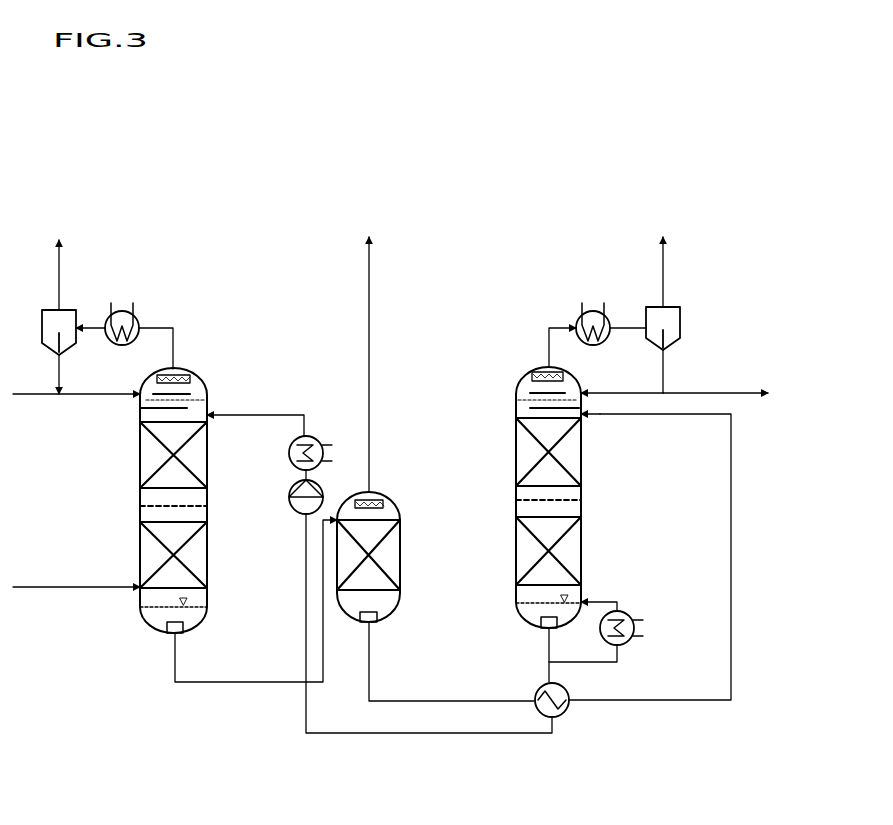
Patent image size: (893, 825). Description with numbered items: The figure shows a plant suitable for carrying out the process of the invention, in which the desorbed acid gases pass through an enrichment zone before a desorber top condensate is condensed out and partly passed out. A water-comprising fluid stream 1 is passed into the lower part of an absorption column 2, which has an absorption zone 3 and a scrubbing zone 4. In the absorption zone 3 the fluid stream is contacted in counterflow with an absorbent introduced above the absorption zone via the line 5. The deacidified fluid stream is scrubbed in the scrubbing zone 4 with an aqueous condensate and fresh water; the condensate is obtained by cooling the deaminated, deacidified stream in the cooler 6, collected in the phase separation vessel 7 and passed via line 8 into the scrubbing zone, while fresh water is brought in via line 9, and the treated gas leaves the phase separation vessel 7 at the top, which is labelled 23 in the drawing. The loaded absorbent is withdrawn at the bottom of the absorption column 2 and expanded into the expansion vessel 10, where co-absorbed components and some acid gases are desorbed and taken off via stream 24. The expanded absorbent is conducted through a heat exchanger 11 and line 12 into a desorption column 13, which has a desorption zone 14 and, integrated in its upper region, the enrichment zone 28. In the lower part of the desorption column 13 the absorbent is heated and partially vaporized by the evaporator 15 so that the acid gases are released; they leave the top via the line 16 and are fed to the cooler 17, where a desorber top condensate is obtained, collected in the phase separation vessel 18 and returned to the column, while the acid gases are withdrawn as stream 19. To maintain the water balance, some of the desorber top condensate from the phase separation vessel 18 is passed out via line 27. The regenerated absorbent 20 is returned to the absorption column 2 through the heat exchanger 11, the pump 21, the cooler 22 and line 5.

The water-comprising fluid stream 1 is at (38, 588).
The absorption column 2 is at (140, 506).
The absorption zone 3 is at (195, 542).
The scrubbing zone 4 is at (140, 402).
The line 5 is at (228, 413).
The cooler 6 is at (137, 320).
The phase separation vessel 7 is at (70, 310).
The line 8 is at (63, 383).
The line 9 is at (32, 397).
The expansion vessel 10 is at (378, 498).
The heat exchanger 11 is at (563, 713).
The line 12 is at (730, 507).
The desorption column 13 is at (516, 393).
The desorption zone 14 is at (572, 537).
The evaporator 15 is at (630, 600).
The line 16 is at (548, 353).
The cooler 17 is at (592, 312).
The phase separation vessel 18 is at (682, 320).
The stream 19 is at (670, 265).
The regenerated absorbent 20 is at (520, 617).
The pump 21 is at (297, 515).
The cooler 22 is at (316, 438).
The vent line 23 is at (60, 253).
The stream 24 is at (370, 282).
The line 27 is at (703, 387).
The enrichment zone 28 is at (587, 402).